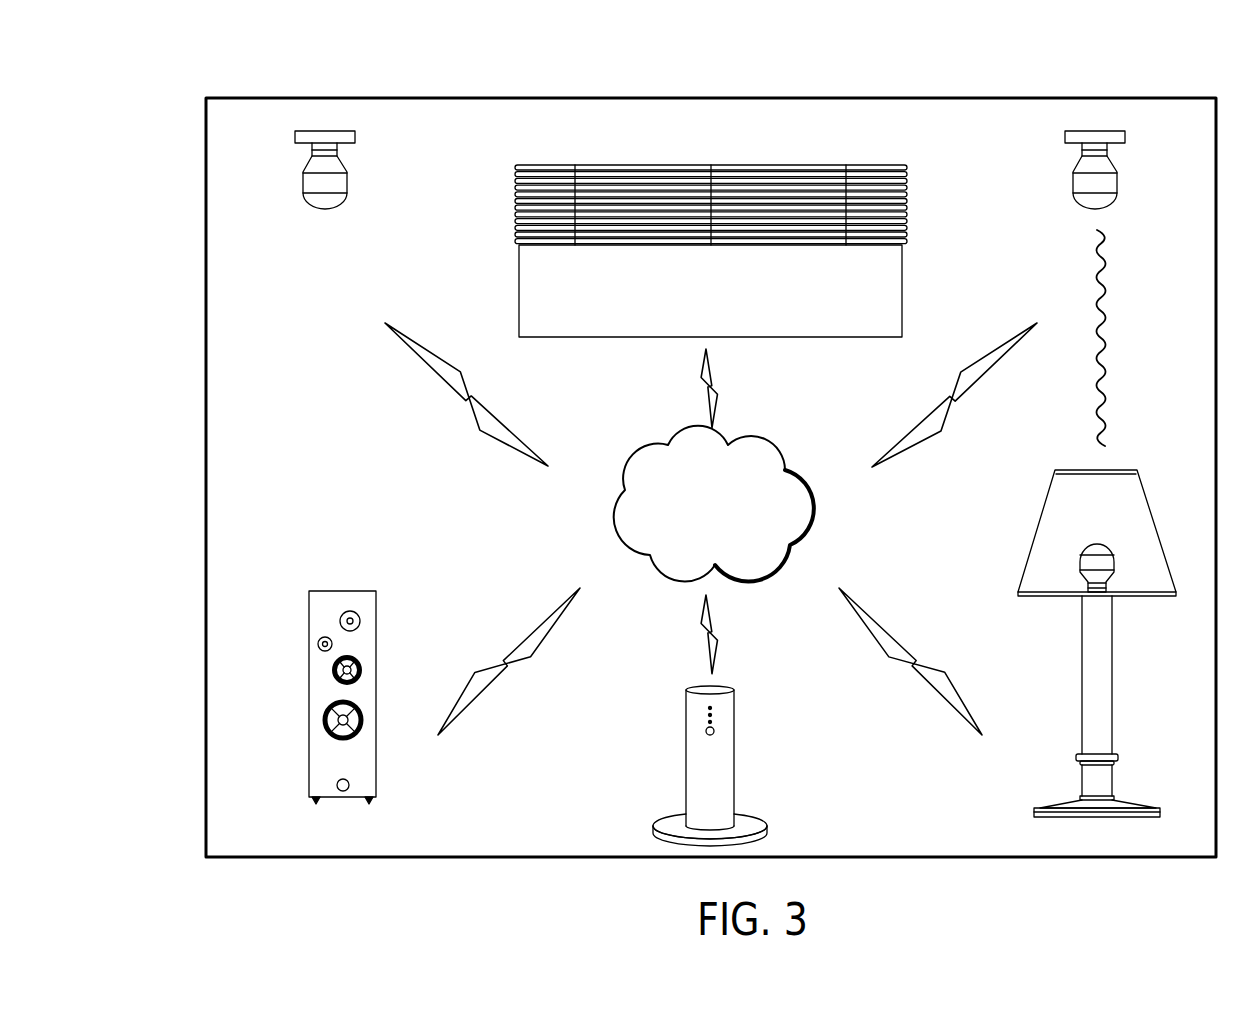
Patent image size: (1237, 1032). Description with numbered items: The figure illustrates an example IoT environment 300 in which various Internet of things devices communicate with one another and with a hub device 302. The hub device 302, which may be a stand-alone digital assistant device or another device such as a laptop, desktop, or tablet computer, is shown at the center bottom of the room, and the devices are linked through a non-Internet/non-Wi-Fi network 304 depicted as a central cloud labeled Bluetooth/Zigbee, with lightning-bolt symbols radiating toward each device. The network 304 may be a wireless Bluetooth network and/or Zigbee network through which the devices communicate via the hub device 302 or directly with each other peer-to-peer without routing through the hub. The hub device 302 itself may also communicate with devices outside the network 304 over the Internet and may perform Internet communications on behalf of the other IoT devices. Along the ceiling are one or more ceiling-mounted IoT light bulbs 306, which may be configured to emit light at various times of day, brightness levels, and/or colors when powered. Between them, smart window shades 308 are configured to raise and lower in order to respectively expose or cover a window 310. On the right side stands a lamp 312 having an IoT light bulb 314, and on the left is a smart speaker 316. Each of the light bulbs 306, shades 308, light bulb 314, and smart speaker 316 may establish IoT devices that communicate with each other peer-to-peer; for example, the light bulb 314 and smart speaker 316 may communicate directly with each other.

The IoT environment 300 is at (203, 52).
The hub device 302 is at (686, 757).
The non-Internet/non-Wi-Fi network 304 is at (613, 522).
The ceiling-mounted IoT light bulbs 306 is at (347, 182).
The smart window shades 308 is at (718, 167).
The window 310 is at (519, 289).
The lamp 312 is at (1112, 676).
The IoT light bulb 314 is at (1096, 543).
The smart speaker 316 is at (309, 740).